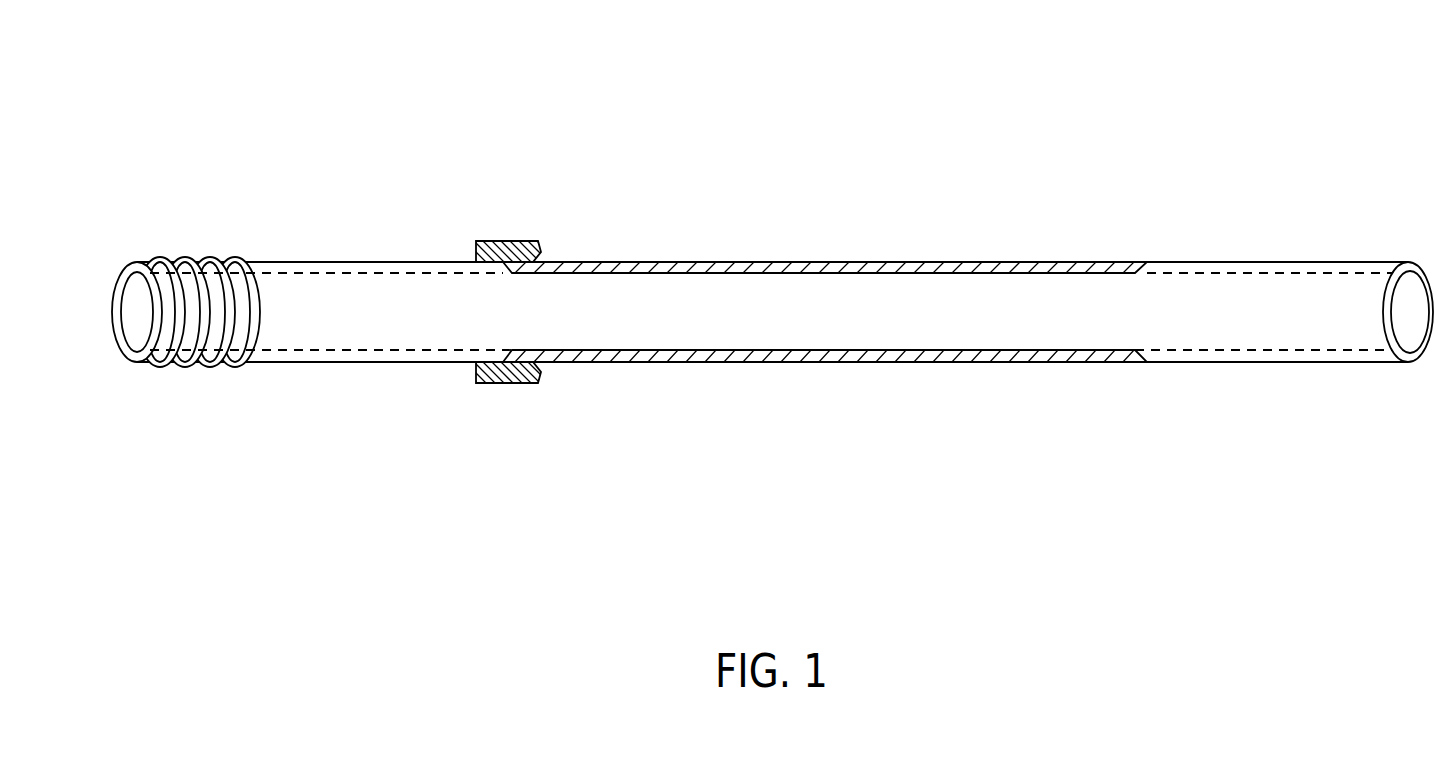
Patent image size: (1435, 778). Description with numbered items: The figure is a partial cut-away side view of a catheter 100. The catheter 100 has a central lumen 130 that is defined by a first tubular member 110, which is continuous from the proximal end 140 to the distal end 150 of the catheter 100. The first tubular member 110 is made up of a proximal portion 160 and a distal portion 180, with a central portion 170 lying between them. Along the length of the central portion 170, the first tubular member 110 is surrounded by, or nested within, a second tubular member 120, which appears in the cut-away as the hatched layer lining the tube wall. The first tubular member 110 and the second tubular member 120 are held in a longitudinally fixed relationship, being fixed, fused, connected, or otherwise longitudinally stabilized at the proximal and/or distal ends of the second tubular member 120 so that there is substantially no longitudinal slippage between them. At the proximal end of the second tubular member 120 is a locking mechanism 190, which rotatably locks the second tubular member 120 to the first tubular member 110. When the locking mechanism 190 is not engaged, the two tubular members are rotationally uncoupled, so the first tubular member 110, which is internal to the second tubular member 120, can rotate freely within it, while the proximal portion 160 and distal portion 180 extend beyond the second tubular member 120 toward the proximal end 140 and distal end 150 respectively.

The catheter 100 is at (283, 53).
The first tubular member 110 is at (363, 363).
The second tubular member 120 is at (857, 363).
The central lumen 130 is at (135, 318).
The proximal end 140 is at (130, 228).
The distal end 150 is at (1388, 262).
The proximal portion 160 is at (411, 308).
The central portion 170 is at (688, 310).
The distal portion 180 is at (1252, 310).
The locking mechanism 190 is at (505, 241).